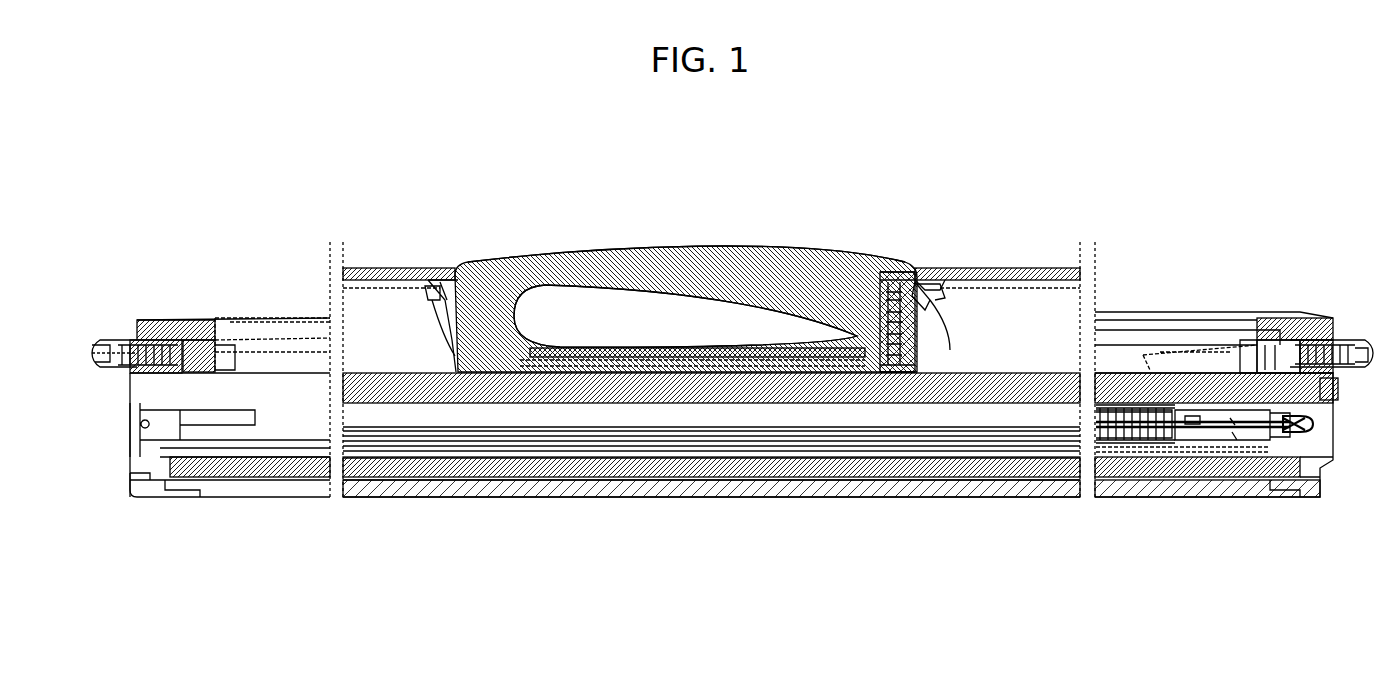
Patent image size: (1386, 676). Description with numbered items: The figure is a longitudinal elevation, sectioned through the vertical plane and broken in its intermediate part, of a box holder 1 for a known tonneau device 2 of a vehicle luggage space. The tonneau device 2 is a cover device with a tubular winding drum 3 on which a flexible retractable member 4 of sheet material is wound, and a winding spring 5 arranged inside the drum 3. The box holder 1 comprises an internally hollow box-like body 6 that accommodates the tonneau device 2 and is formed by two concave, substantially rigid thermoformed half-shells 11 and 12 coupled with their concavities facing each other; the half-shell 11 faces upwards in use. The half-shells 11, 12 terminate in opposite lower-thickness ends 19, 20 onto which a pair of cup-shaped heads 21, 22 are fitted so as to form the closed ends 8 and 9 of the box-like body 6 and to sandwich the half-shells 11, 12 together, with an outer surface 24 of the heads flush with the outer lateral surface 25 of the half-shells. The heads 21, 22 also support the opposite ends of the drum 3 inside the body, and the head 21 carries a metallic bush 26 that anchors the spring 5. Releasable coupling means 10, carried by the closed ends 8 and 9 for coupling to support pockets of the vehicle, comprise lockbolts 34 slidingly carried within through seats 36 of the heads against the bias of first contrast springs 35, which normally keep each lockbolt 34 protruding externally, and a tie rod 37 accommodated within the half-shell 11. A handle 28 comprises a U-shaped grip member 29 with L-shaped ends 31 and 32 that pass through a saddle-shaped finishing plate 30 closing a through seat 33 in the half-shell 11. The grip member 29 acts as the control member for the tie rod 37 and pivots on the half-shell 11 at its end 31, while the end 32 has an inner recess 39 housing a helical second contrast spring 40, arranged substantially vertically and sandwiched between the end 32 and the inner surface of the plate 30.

The box holder 1 is at (1151, 216).
The tonneau device 2 is at (1150, 440).
The tubular winding drum 3 is at (1214, 445).
The flexible retractable member 4 is at (1108, 408).
The winding spring 5 is at (1120, 442).
The box-like body 6 is at (830, 498).
The closed end 8 is at (1300, 318).
The closed end 9 is at (172, 300).
The releasable coupling means 10 is at (94, 334).
The half-shell 11 is at (372, 268).
The half-shell 12 is at (380, 497).
The end of the half-shells 19 is at (189, 318).
The end of the half-shells 20 is at (1281, 330).
The cup-shaped head 21 is at (1339, 383).
The cup-shaped head 22 is at (131, 388).
The outer surface of the heads 24 is at (177, 500).
The outer lateral surface of the half-shells 25 is at (1012, 266).
The bush 26 is at (1316, 426).
The handle 28 is at (730, 241).
The grip member 29 is at (621, 250).
The finishing badge or plate 30 is at (657, 349).
The L-shaped end 31 is at (458, 360).
The L-shaped end 32 is at (904, 375).
The through seat 33 is at (720, 332).
The lockbolt 34 is at (96, 356).
The first contrast spring 35 is at (217, 350).
The through seat 36 is at (140, 347).
The tie rod 37 is at (1165, 352).
The inner recess 39 is at (920, 298).
The second contrast spring 40 is at (930, 298).